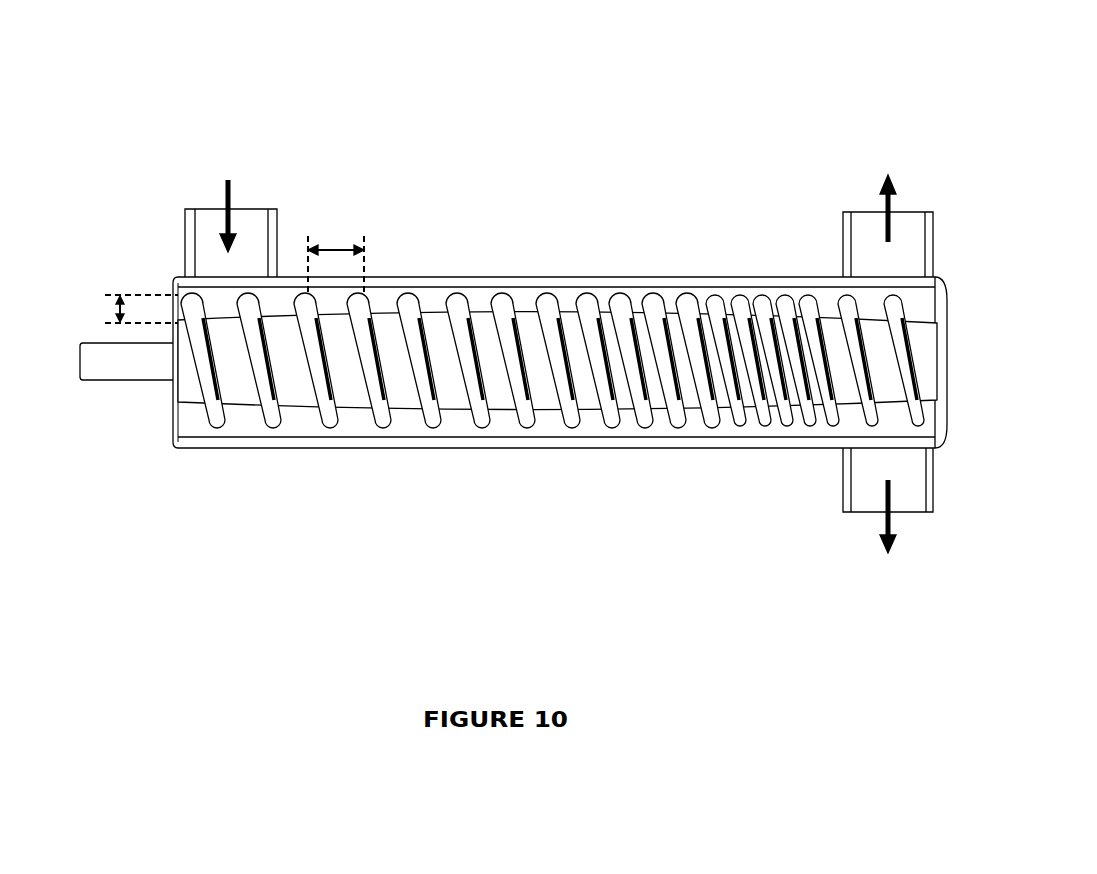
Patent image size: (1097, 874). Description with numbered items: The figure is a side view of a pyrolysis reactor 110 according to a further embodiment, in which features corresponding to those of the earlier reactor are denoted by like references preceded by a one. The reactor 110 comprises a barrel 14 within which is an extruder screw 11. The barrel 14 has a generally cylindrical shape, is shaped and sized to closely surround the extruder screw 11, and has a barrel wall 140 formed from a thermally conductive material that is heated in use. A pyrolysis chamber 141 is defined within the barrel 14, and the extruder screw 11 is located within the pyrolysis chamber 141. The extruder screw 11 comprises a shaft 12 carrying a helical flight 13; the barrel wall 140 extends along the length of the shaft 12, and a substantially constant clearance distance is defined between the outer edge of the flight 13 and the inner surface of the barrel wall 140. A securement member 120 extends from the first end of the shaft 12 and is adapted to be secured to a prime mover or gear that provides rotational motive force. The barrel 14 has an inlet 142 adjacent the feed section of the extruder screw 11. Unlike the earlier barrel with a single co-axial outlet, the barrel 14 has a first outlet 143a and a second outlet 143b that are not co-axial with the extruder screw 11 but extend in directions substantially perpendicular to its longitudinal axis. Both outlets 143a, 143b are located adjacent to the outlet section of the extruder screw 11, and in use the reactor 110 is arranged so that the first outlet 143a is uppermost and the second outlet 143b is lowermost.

The pyrolysis reactor 110 is at (780, 65).
The extruder screw 11 is at (286, 493).
The shaft 12 is at (412, 390).
The flight 13 is at (562, 420).
The barrel 14 is at (510, 277).
The barrel wall 140 is at (606, 287).
The pyrolysis chamber 141 is at (378, 292).
The inlet 142 is at (200, 208).
The first outlet 143a is at (852, 212).
The second outlet 143b is at (857, 514).
The securement member 120 is at (115, 358).